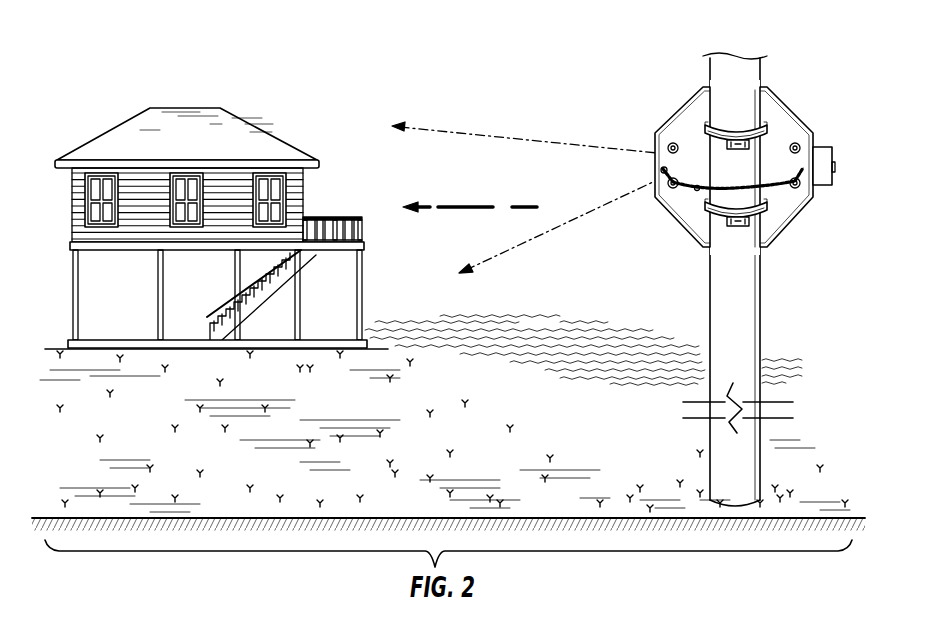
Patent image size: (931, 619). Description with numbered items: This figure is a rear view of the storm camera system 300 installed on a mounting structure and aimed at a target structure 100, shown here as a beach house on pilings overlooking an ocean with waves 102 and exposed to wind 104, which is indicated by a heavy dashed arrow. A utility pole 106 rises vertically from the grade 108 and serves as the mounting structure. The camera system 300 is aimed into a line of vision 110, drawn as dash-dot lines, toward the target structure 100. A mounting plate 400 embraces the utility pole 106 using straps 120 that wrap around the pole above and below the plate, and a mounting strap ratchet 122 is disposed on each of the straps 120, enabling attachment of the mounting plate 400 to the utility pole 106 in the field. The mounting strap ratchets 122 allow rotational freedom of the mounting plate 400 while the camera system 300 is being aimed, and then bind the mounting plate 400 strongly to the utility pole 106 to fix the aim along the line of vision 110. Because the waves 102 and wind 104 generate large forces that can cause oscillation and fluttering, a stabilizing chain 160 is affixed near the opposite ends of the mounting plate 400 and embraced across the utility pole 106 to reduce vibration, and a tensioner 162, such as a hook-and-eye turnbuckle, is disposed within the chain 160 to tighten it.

The target structure 100 is at (122, 140).
The waves 102 is at (627, 321).
The wind 104 is at (478, 206).
The utility pole 106 is at (756, 81).
The grade 108 is at (503, 518).
The line of vision 110 is at (553, 232).
The straps 120 is at (705, 137).
The mounting strap ratchet 122 is at (734, 140).
The stabilizing chain 160 is at (767, 190).
The tensioner 162 is at (697, 187).
The camera system 300 is at (724, 157).
The mounting plate 400 is at (785, 120).